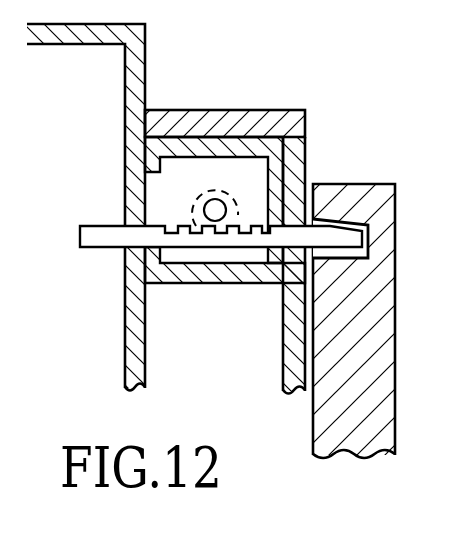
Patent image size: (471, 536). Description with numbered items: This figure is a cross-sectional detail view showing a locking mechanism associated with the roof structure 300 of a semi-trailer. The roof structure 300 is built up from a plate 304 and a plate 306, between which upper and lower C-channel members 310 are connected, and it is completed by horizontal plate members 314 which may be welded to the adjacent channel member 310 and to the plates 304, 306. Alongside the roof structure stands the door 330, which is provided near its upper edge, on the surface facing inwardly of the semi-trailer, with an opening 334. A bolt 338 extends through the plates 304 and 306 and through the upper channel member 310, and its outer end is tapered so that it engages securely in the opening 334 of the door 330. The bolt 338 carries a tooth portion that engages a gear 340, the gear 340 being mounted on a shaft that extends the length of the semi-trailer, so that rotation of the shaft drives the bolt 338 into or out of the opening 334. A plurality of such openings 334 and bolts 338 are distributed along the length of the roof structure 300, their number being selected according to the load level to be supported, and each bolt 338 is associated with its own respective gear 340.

The roof structure 300 is at (250, 67).
The plate 304 is at (137, 123).
The plate 306 is at (306, 150).
The C-channel member 310 is at (238, 284).
The horizontal plate member 314 is at (213, 113).
The door 330 is at (327, 437).
The opening 334 is at (366, 246).
The bolt 338 is at (100, 249).
The gear 340 is at (197, 212).